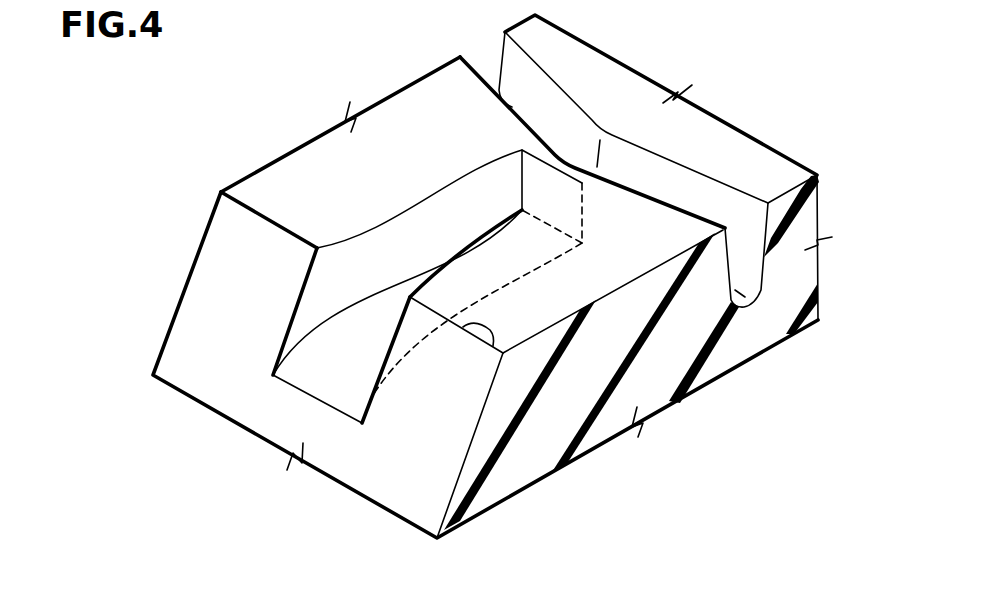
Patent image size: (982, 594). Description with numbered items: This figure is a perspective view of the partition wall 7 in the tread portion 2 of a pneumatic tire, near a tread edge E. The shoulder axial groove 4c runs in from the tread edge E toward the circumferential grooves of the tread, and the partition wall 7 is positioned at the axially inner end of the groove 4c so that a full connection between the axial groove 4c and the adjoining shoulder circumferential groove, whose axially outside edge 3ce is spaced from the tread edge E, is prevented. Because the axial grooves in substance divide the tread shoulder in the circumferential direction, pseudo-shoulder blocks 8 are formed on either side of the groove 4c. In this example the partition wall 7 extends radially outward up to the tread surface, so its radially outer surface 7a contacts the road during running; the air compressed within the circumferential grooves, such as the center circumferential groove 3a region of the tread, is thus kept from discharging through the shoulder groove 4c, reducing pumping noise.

The tread portion 2 is at (327, 118).
The pseudo-shoulder block 8 is at (317, 173).
The partition wall 7 is at (540, 183).
The shoulder axial groove 4c is at (357, 342).
The center circumferential groove 3a is at (683, 195).
The axially outside edge of the shoulder circumferential groove 3ce is at (499, 90).
The radially outer surface of the partition wall 7a is at (578, 168).
The tread edge E is at (463, 327).